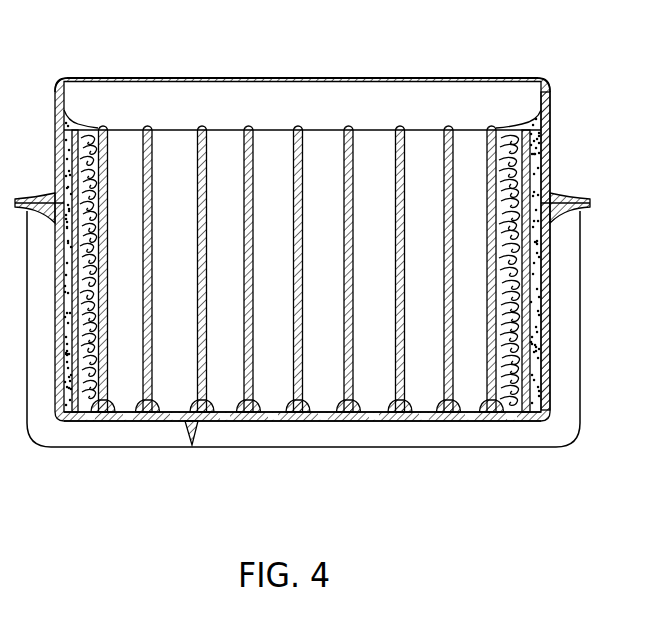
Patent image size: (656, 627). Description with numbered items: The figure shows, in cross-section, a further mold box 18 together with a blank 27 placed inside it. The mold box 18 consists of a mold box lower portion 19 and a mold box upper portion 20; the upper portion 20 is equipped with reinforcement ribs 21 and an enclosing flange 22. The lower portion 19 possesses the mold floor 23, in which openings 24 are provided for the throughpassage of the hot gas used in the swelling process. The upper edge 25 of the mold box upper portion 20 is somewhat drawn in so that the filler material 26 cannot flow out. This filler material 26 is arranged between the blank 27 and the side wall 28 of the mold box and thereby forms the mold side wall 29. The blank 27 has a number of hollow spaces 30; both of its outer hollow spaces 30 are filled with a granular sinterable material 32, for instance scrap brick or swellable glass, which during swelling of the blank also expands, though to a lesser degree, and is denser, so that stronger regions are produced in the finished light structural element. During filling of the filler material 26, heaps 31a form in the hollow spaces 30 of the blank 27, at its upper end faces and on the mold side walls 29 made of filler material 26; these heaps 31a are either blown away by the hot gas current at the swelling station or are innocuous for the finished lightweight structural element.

The mold box 18 is at (317, 73).
The mold box lower portion 19 is at (552, 337).
The mold box upper portion 20 is at (387, 92).
The reinforcement ribs 21 is at (116, 440).
The enclosing flange 22 is at (563, 197).
The mold floor 23 is at (258, 422).
The openings 24 is at (327, 422).
The upper edge 25 is at (62, 79).
The filler material 26 is at (537, 248).
The blank 27 is at (322, 130).
The side wall 28 is at (552, 288).
The mold side wall 29 is at (527, 97).
The hollow spaces 30 is at (424, 144).
The heaps 31a is at (67, 117).
The granular sinterable material 32 is at (83, 317).